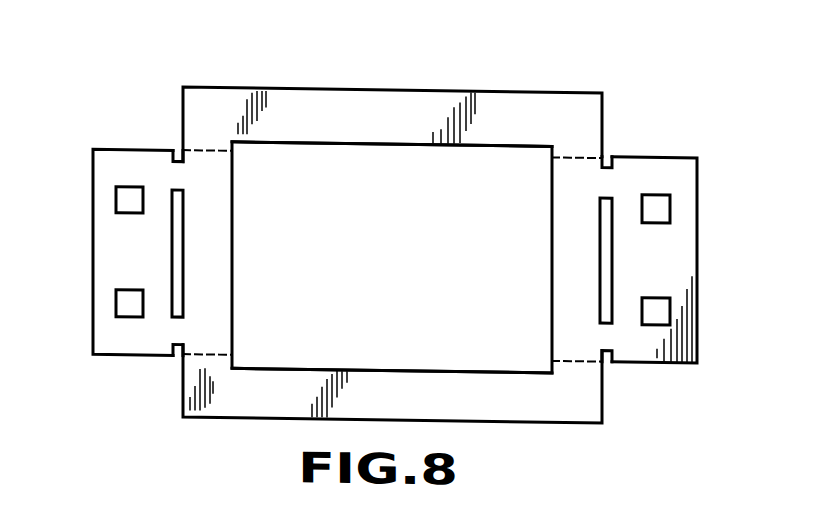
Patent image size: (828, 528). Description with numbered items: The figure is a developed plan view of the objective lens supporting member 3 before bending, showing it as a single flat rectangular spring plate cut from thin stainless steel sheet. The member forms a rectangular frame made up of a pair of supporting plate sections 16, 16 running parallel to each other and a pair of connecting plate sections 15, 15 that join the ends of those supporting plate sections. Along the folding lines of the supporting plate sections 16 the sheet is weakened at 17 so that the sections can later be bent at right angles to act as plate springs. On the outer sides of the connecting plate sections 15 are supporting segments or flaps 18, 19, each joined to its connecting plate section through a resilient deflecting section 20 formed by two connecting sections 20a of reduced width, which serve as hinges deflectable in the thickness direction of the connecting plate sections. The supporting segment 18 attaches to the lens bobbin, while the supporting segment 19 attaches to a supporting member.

The objective lens supporting member 3 is at (382, 81).
The connecting plate section 15 is at (210, 253).
The supporting plate section 16 is at (395, 124).
The weakened folding section 17 is at (207, 147).
The supporting segment 18 is at (668, 248).
The supporting segment 19 is at (100, 247).
The resilient deflecting section 20 is at (172, 142).
The connecting section of reduced width 20a is at (607, 178).